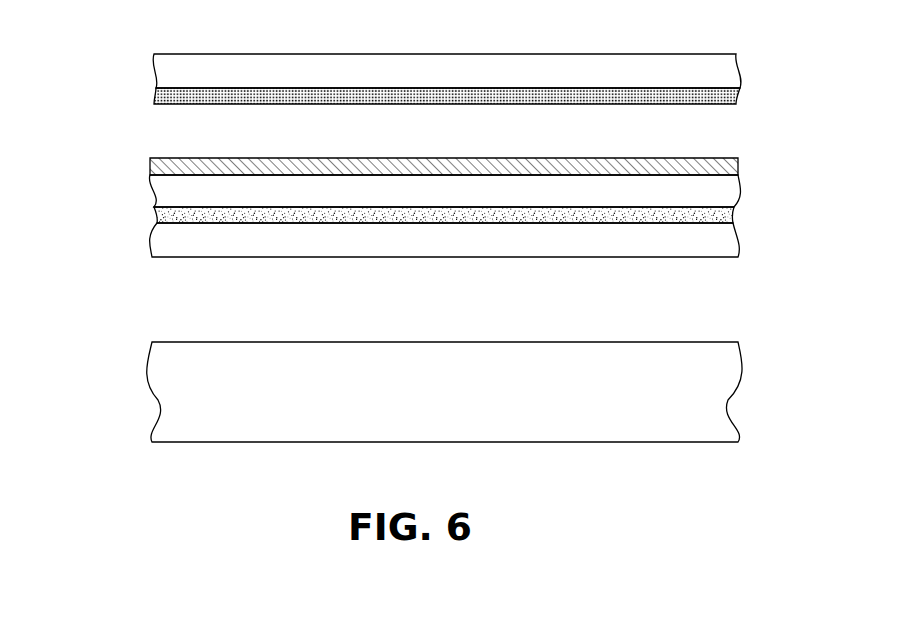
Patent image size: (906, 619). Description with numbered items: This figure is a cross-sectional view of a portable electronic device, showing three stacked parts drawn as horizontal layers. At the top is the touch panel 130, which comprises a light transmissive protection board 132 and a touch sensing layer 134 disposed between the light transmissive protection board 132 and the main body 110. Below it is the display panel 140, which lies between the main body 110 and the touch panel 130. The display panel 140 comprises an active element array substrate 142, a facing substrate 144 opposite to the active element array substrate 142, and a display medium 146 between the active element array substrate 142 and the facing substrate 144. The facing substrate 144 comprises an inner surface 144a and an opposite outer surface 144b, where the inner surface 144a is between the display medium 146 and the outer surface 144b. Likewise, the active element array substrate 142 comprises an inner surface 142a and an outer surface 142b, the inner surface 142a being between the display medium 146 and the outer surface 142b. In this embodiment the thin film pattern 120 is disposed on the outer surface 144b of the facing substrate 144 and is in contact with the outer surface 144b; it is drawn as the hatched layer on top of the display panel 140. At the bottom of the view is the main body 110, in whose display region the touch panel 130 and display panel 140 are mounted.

The main body 110 is at (190, 397).
The thin film pattern 120 is at (738, 166).
The touch panel 130 is at (393, 76).
The light transmissive protection board 132 is at (172, 74).
The touch sensing layer 134 is at (156, 100).
The display panel 140 is at (421, 231).
The active element array substrate 142 is at (177, 238).
The inner surface 142a is at (694, 226).
The outer surface 142b is at (700, 254).
The facing substrate 144 is at (178, 191).
The inner surface 144a is at (694, 206).
The outer surface 144b is at (701, 178).
The display medium 146 is at (162, 220).